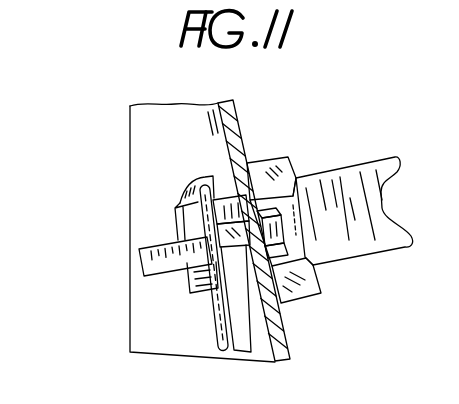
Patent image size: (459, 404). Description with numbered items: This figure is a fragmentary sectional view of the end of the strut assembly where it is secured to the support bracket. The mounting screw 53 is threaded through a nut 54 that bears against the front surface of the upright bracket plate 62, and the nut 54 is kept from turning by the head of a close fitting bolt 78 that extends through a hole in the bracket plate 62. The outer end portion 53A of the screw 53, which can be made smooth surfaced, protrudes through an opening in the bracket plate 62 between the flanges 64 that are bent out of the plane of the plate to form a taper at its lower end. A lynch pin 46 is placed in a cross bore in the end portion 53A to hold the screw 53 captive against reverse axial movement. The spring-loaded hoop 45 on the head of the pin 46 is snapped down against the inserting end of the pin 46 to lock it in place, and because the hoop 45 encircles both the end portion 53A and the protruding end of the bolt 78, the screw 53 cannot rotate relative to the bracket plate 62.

The spring-loaded hoop 45 is at (219, 323).
The lynch pin 46 is at (244, 320).
The mounting screw 53 is at (343, 183).
The outer end portion of the screw 53A is at (175, 211).
The nut 54 is at (273, 158).
The bracket plate 62 is at (220, 133).
The flanges 64 is at (139, 289).
The bolt 78 is at (148, 248).